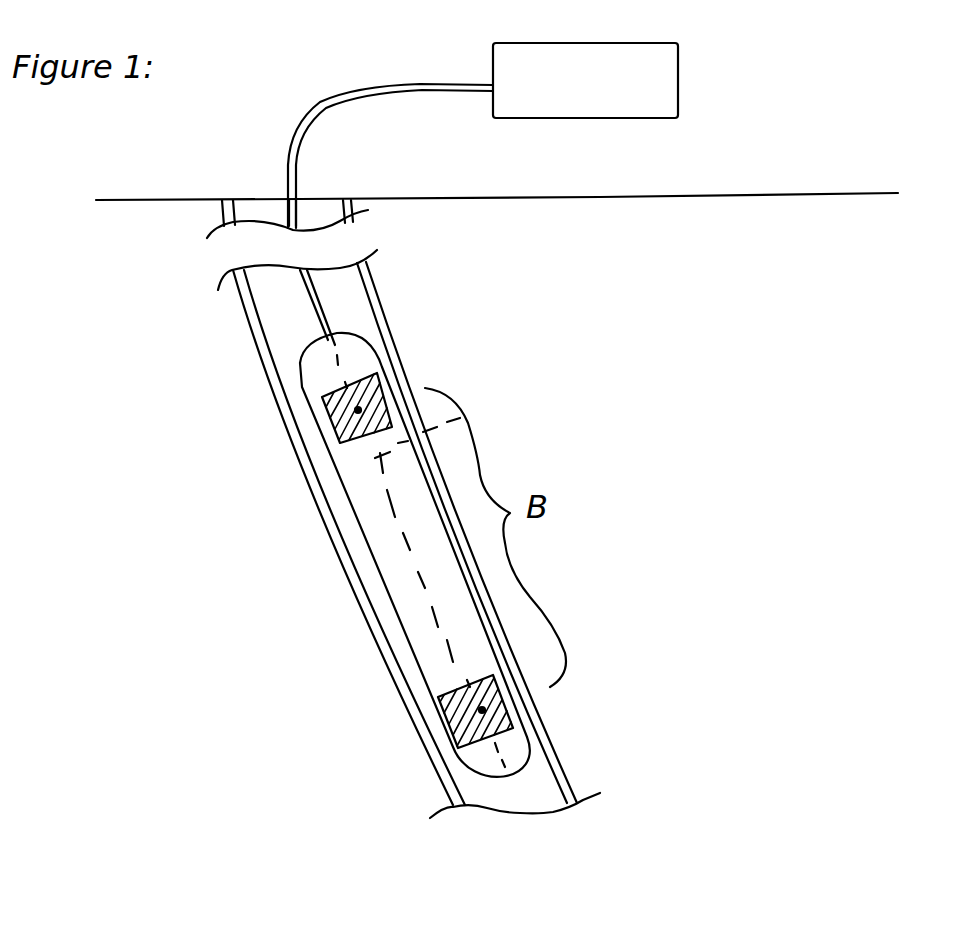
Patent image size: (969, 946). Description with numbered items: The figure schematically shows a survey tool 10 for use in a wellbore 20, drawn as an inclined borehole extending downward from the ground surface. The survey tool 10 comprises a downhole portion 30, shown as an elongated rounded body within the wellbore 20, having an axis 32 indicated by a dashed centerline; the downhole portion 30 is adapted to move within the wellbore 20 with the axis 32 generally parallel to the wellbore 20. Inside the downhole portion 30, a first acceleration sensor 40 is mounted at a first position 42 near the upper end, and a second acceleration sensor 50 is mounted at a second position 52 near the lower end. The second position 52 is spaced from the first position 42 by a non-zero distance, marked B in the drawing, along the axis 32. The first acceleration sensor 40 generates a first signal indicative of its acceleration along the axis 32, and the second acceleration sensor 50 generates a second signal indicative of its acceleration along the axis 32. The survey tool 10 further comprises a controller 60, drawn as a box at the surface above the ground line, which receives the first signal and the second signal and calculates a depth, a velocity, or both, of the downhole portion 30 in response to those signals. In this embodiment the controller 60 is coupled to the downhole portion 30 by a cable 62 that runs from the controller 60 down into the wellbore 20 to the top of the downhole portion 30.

The survey tool 10 is at (623, 353).
The wellbore 20 is at (375, 293).
The downhole portion 30 is at (377, 360).
The axis 32 is at (475, 415).
The first acceleration sensor 40 is at (330, 412).
The first position 42 is at (358, 412).
The second acceleration sensor 50 is at (440, 708).
The second position 52 is at (482, 712).
The controller 60 is at (680, 56).
The cable 62 is at (307, 302).